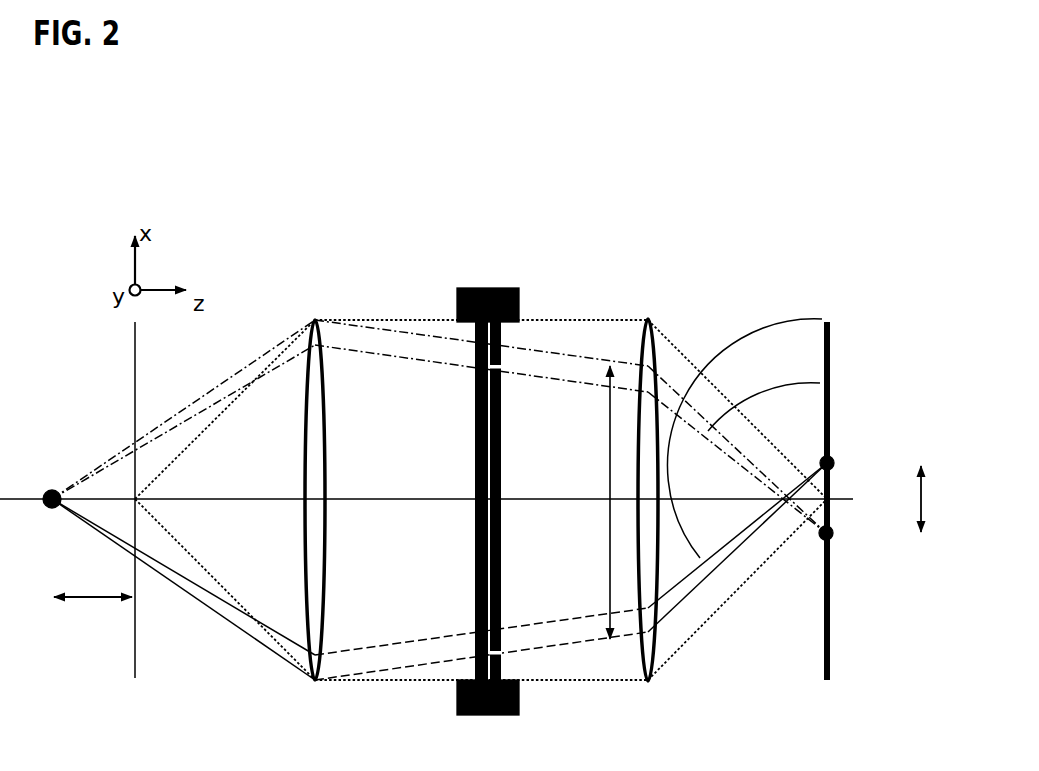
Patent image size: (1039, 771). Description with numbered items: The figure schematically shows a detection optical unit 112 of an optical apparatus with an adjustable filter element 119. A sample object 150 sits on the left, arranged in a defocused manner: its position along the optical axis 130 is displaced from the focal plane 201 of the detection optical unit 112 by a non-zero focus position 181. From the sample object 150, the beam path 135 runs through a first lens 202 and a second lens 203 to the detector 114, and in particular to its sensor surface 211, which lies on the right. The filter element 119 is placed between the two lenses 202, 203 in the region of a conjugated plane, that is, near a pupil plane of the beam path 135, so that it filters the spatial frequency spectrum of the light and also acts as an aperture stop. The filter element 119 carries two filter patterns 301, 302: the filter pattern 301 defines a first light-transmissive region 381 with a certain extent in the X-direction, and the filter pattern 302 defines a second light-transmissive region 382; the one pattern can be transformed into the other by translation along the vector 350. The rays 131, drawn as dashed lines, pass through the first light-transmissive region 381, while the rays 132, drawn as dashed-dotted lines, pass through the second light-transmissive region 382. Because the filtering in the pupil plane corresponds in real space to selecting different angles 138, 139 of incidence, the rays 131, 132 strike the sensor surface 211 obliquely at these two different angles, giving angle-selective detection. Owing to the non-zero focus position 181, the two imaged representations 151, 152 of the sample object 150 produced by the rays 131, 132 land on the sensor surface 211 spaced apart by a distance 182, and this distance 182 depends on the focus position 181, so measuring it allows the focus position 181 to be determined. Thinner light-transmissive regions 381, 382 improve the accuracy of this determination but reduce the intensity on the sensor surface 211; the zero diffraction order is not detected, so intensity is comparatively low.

The detection optical unit 112 is at (750, 150).
The detector 114 is at (805, 464).
The filter element 119 is at (486, 464).
The optical axis 130 is at (385, 497).
The rays 131 is at (193, 592).
The rays 132 is at (197, 400).
The beam path 135 is at (390, 319).
The angle 138 is at (785, 383).
The angle 139 is at (748, 334).
The sample object 150 is at (52, 489).
The imaged representation 151 is at (834, 463).
The imaged representation 152 is at (833, 533).
The focus position 181 is at (90, 599).
The distance 182 is at (919, 489).
The focal plane 201 is at (137, 672).
The lens 202 is at (321, 593).
The lens 203 is at (641, 663).
The sensor surface 211 is at (823, 602).
The filter pattern 301 is at (472, 404).
The filter pattern 302 is at (505, 457).
The vector 350 is at (608, 590).
The first light-transmissive region 381 is at (474, 646).
The second light-transmissive region 382 is at (504, 366).